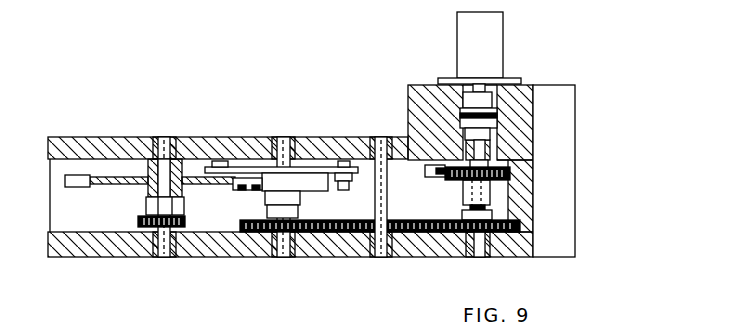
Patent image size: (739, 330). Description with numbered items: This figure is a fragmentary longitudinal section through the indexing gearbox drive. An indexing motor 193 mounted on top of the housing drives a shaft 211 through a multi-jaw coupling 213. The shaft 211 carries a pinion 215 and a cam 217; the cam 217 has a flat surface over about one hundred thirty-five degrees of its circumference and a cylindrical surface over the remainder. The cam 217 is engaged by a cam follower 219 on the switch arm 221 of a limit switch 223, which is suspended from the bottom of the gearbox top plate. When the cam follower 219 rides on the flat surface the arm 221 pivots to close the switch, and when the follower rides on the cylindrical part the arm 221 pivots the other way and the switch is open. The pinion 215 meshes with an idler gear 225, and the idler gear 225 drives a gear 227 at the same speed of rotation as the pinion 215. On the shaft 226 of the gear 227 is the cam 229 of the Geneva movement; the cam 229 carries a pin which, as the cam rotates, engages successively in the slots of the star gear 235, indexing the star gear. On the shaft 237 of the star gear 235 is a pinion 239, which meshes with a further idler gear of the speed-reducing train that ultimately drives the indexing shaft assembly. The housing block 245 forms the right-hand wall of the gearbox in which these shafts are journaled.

The indexing motor 193 is at (503, 50).
The multi-jaw coupling 213 is at (497, 112).
The shaft of the star gear 237 is at (158, 137).
The star gear 235 is at (186, 160).
The shaft of gear 226 is at (283, 137).
The cam 229 is at (305, 178).
The switch arm 221 is at (408, 126).
The limit switch 223 is at (428, 172).
The cam follower 219 is at (445, 176).
The cam 217 is at (510, 170).
The shaft 211 is at (486, 207).
The pinion 215 is at (492, 257).
The housing block 245 is at (527, 248).
The pinion 239 is at (140, 220).
The gear 227 is at (245, 217).
The idler gear 225 is at (350, 219).